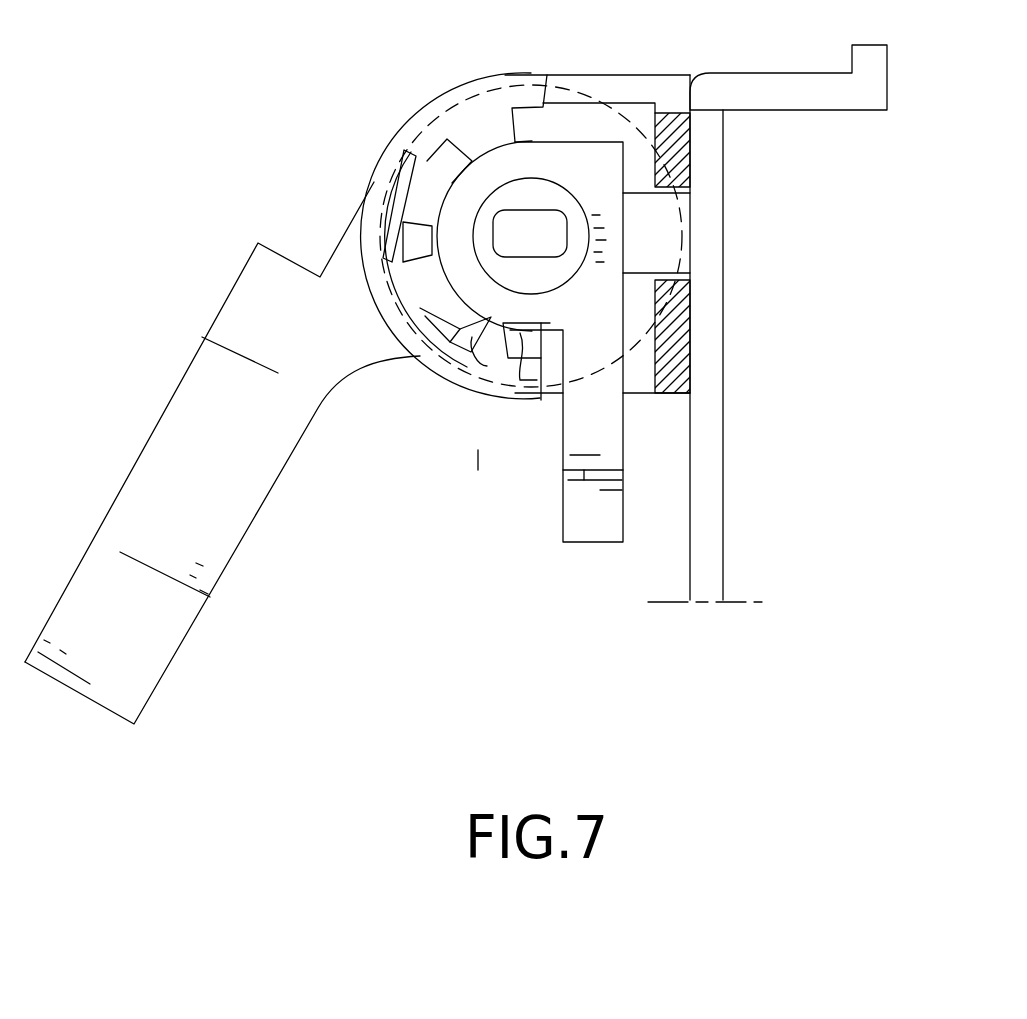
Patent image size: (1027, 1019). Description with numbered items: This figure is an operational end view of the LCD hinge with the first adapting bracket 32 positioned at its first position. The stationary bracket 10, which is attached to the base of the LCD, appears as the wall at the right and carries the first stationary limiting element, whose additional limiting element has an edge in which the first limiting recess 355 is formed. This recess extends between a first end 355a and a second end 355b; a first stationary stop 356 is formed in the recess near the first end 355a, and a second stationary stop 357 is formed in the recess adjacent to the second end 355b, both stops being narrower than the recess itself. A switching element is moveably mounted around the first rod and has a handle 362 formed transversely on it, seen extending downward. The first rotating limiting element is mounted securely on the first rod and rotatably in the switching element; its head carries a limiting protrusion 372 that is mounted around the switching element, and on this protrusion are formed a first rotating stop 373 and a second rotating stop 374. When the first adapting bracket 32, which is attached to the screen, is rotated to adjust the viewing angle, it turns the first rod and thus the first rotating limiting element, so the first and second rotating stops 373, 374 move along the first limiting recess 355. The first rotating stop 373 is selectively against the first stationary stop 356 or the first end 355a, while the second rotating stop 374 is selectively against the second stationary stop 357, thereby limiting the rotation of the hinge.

The stationary bracket 10 is at (722, 358).
The first adapting bracket 32 is at (197, 405).
The first limiting recess 355 is at (428, 294).
The first end 355a is at (510, 127).
The second end 355b is at (543, 393).
The first stationary stop 356 is at (440, 150).
The second stationary stop 357 is at (534, 352).
The handle 362 is at (596, 528).
The limiting protrusion 372 is at (388, 245).
The first rotating stop 373 is at (417, 245).
The second rotating stop 374 is at (487, 350).